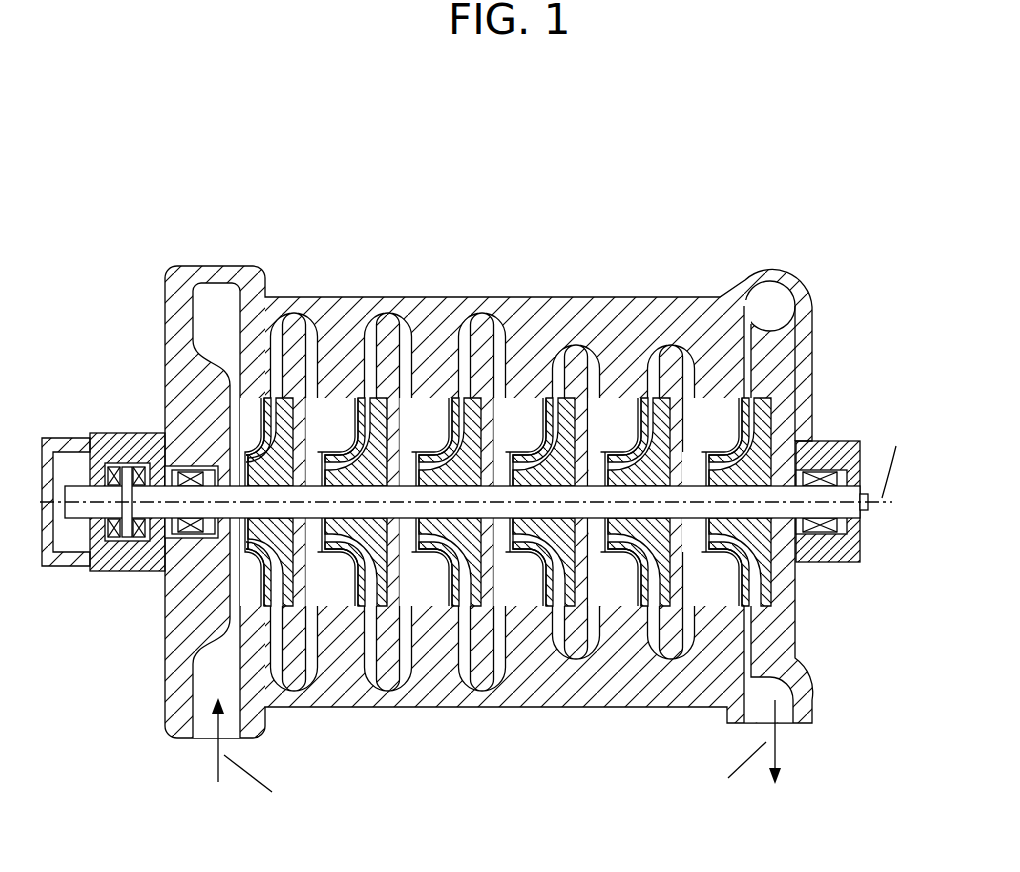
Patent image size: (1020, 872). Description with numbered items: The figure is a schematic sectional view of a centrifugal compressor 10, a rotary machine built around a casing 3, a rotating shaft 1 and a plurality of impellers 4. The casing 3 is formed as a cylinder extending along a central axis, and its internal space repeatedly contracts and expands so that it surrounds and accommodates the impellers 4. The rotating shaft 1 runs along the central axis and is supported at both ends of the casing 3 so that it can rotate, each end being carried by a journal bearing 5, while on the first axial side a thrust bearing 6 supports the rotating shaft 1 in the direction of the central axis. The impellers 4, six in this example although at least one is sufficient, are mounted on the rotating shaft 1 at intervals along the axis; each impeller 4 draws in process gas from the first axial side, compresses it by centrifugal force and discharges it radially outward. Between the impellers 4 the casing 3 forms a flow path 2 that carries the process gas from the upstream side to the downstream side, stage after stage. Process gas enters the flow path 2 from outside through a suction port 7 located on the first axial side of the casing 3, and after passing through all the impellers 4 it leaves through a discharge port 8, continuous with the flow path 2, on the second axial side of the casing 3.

The rotating shaft 1 is at (777, 520).
The flow path 2 is at (296, 318).
The casing 3 is at (720, 296).
The impeller 4 is at (265, 600).
The journal bearing 5 is at (188, 468).
The thrust bearing 6 is at (122, 478).
The suction port 7 is at (205, 722).
The discharge port 8 is at (790, 738).
The centrifugal compressor 10 is at (731, 178).